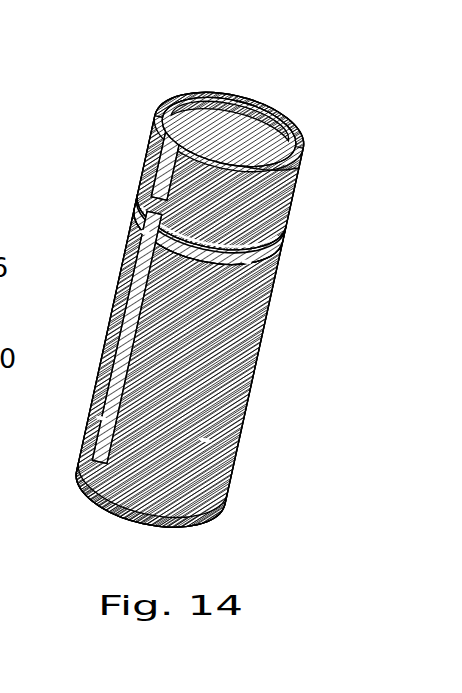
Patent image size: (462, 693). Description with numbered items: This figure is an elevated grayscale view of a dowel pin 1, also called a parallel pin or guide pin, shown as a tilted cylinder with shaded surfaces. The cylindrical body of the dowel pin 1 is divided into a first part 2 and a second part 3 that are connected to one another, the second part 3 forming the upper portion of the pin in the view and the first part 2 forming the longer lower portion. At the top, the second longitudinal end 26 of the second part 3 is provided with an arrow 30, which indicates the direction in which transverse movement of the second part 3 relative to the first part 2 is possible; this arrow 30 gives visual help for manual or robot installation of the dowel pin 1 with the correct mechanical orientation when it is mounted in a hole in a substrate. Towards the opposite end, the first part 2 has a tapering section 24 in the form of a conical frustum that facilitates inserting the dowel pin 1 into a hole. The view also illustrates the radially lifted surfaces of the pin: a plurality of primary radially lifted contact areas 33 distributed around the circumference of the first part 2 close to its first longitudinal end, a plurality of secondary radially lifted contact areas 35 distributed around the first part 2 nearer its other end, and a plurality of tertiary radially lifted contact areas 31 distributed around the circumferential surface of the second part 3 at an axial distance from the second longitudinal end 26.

The dowel pin 1 is at (91, 79).
The first part 2 is at (267, 410).
The second part 3 is at (127, 138).
The tapering section 24 is at (212, 512).
The second longitudinal end 26 is at (217, 96).
The arrow 30 is at (264, 118).
The tertiary radially lifted contact areas 31 is at (157, 190).
The primary radially lifted contact areas 33 is at (102, 418).
The secondary radially lifted contact areas 35 is at (143, 232).